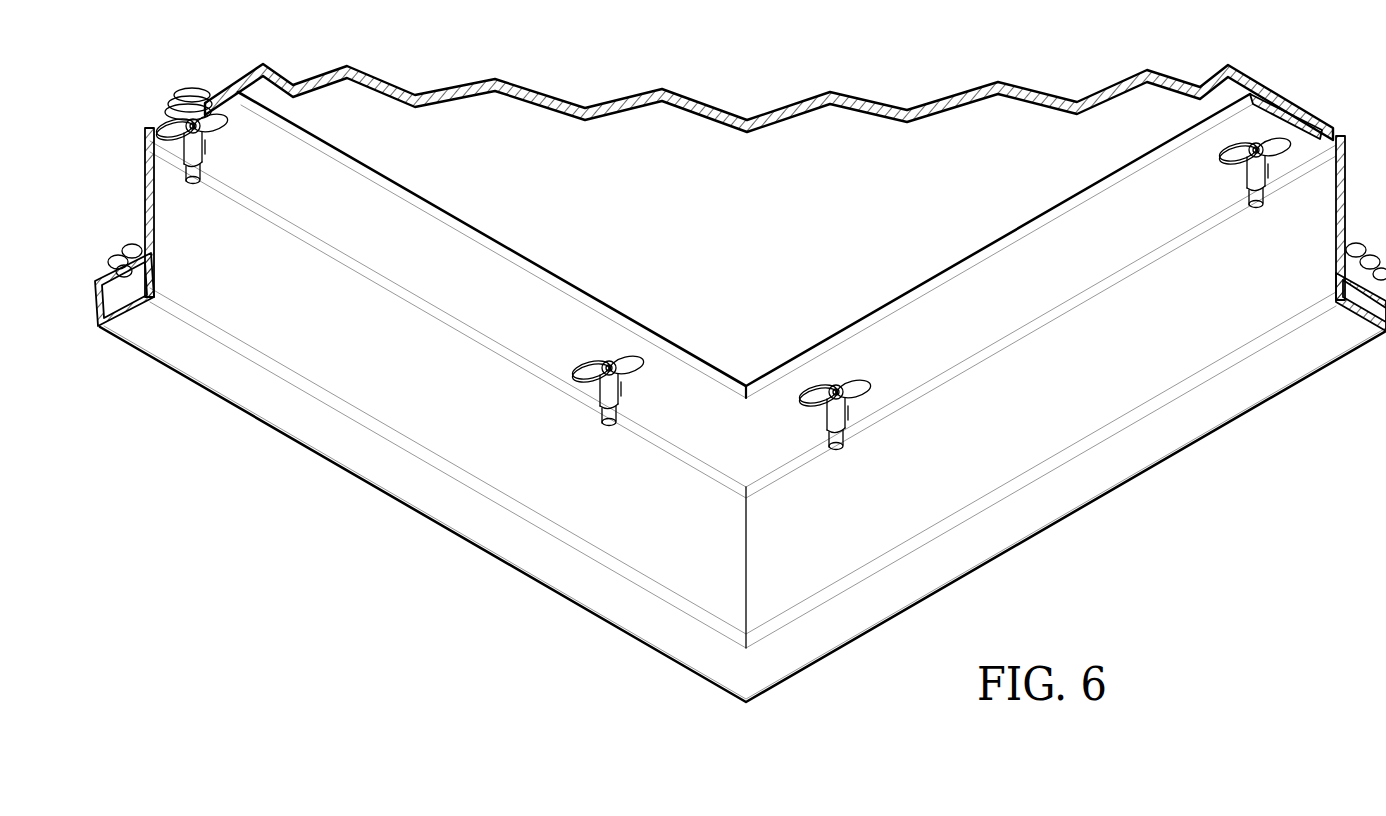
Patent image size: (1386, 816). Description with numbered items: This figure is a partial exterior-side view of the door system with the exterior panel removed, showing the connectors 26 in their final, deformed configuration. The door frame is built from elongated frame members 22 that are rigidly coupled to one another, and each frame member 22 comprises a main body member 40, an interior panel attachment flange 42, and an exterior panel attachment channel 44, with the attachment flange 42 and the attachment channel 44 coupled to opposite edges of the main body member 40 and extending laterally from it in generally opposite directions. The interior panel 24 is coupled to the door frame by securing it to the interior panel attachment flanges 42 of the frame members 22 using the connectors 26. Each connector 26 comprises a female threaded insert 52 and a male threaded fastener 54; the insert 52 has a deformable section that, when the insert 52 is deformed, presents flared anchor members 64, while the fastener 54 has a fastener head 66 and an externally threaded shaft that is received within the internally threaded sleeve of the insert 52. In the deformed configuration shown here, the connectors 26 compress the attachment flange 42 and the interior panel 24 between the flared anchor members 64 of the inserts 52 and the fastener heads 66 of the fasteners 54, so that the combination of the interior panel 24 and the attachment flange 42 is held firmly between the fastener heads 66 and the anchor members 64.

The frame member 22 is at (352, 527).
The interior panel 24 is at (835, 147).
The connector 26 is at (242, 170).
The main body member 40 is at (342, 337).
The interior panel attachment flange 42 is at (431, 244).
The exterior panel attachment channel 44 is at (497, 538).
The female threaded insert 52 is at (205, 180).
The male threaded fastener 54 is at (187, 174).
The flared anchor member 64 is at (162, 133).
The fastener head 66 is at (190, 90).